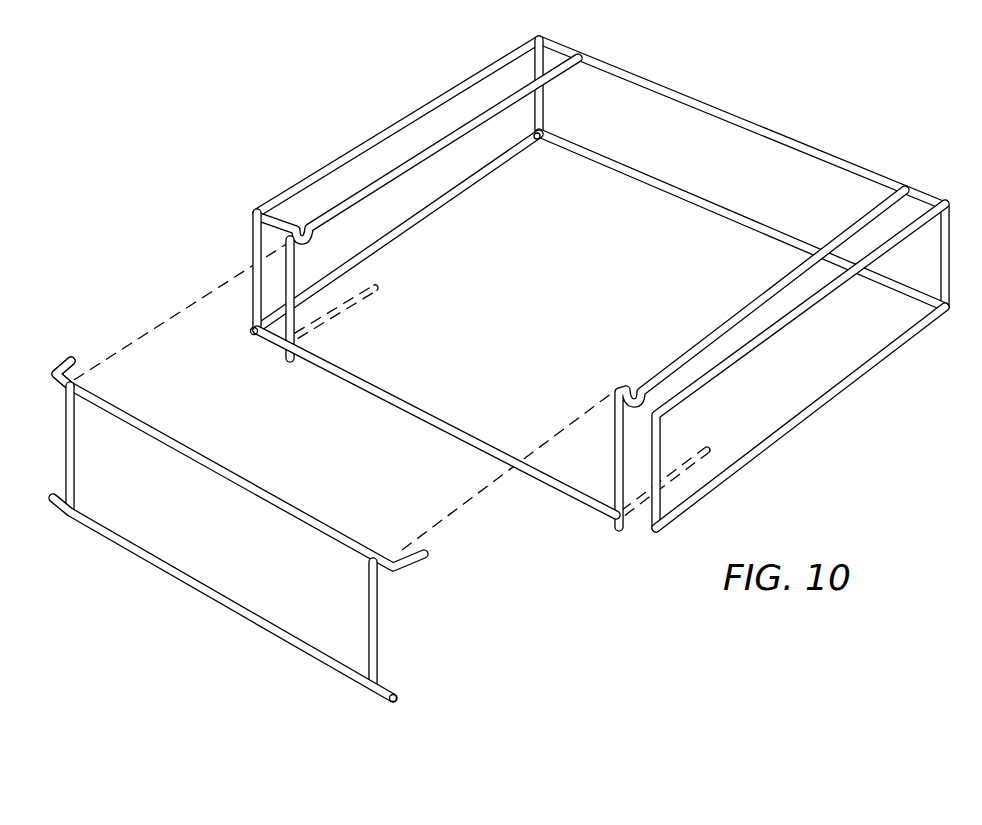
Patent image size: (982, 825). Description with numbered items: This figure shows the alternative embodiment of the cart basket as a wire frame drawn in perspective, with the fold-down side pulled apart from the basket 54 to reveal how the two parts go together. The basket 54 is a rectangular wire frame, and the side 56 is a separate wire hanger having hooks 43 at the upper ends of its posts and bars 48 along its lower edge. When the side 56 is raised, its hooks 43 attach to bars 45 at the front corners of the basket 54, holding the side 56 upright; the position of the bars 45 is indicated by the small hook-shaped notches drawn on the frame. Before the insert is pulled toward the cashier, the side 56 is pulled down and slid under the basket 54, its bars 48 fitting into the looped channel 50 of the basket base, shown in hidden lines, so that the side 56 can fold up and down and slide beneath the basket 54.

The hooks 43 is at (65, 358).
The bars 45 is at (304, 226).
The bars 48 is at (53, 508).
The looped channel 50 is at (681, 468).
The basket 54 is at (773, 136).
The side 56 is at (302, 504).